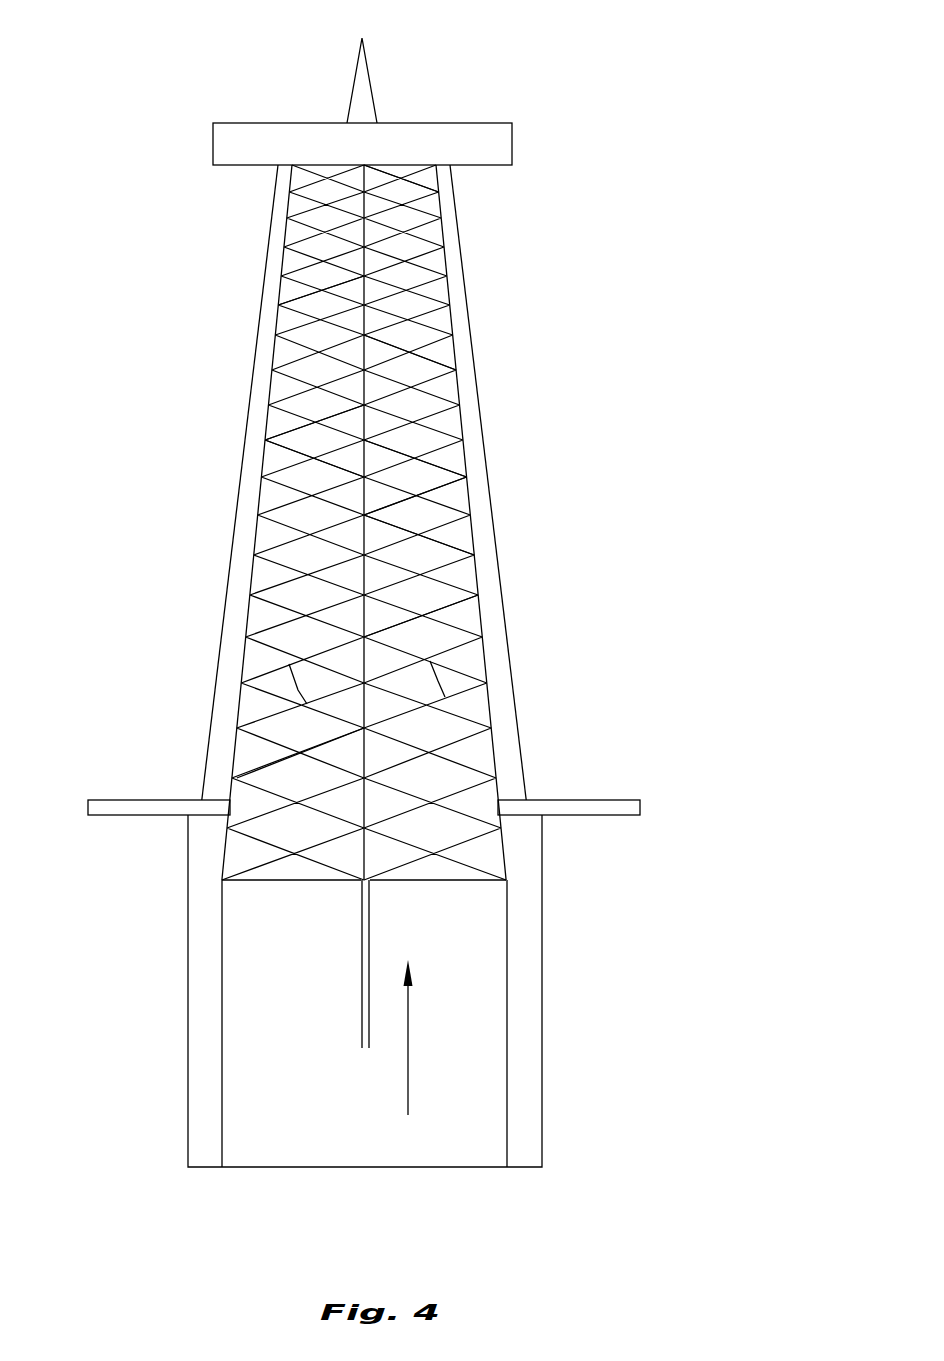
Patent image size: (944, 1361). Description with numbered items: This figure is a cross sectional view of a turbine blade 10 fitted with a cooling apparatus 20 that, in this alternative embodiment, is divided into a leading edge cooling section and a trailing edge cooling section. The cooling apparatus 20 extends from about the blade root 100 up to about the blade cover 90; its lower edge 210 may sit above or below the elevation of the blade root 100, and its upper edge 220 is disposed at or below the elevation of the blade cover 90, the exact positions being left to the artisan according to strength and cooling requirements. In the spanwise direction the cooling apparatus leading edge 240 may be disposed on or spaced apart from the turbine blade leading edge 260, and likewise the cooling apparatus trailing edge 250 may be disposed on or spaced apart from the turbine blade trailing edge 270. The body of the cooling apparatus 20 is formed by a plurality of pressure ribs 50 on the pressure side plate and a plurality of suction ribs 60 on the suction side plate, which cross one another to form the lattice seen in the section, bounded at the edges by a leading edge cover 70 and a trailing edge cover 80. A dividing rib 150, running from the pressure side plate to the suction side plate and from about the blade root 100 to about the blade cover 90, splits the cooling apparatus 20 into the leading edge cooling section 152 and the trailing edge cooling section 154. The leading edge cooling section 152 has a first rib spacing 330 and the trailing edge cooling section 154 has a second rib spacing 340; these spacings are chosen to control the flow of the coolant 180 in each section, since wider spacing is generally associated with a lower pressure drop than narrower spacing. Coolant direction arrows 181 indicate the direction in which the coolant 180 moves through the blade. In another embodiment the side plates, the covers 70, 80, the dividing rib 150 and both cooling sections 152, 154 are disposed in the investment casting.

The turbine blade 10 is at (452, 86).
The blade cover 90 is at (318, 140).
The cooling apparatus 20 is at (406, 289).
The upper edge 220 is at (403, 174).
The turbine blade trailing edge 270 is at (470, 320).
The turbine blade leading edge 260 is at (231, 546).
The cooling apparatus leading edge 240 is at (240, 626).
The cooling apparatus trailing edge 250 is at (458, 411).
The leading edge cover 70 is at (287, 328).
The dividing rib 150 is at (410, 364).
The trailing edge cooling section 154 is at (426, 445).
The pressure ribs 50 is at (288, 433).
The suction ribs 60 is at (288, 445).
The trailing edge cover 80 is at (450, 481).
The first rib spacing 330 is at (289, 688).
The second rib spacing 340 is at (432, 669).
The leading edge cooling section 152 is at (275, 777).
The blade root 100 is at (598, 816).
The lower edge 210 is at (307, 877).
The coolant 180 is at (340, 1156).
The coolant direction arrows 181 is at (410, 1048).